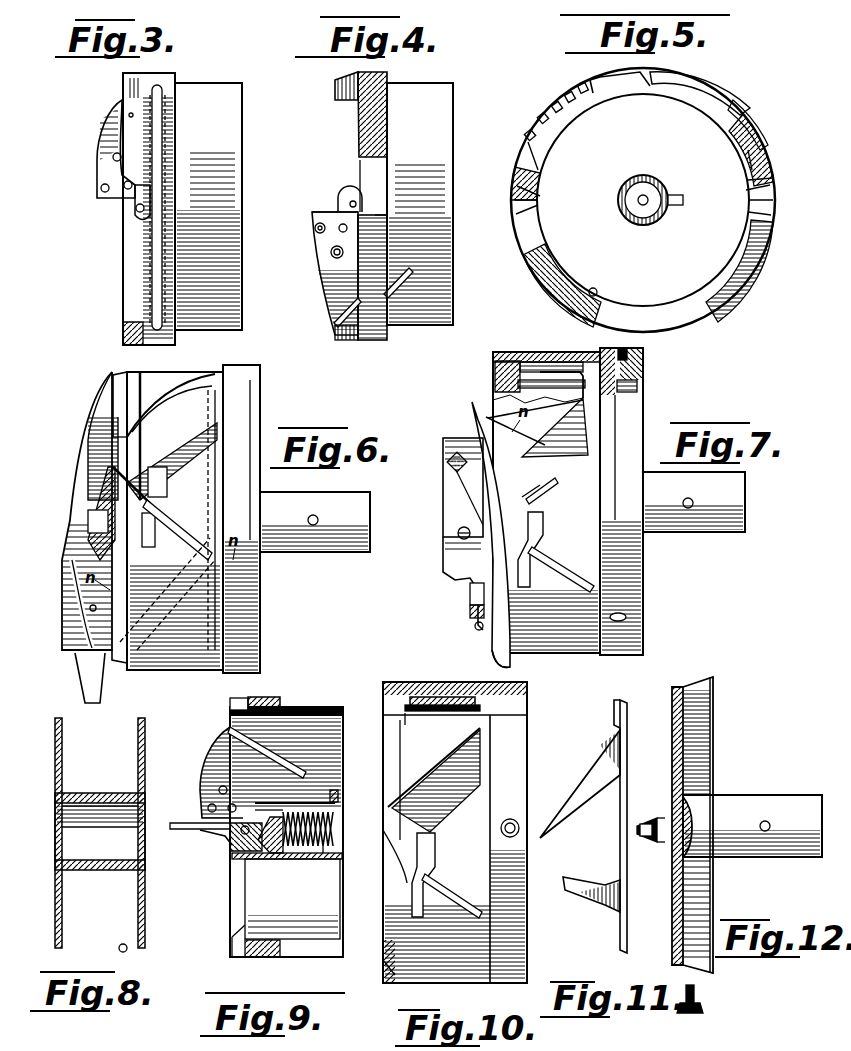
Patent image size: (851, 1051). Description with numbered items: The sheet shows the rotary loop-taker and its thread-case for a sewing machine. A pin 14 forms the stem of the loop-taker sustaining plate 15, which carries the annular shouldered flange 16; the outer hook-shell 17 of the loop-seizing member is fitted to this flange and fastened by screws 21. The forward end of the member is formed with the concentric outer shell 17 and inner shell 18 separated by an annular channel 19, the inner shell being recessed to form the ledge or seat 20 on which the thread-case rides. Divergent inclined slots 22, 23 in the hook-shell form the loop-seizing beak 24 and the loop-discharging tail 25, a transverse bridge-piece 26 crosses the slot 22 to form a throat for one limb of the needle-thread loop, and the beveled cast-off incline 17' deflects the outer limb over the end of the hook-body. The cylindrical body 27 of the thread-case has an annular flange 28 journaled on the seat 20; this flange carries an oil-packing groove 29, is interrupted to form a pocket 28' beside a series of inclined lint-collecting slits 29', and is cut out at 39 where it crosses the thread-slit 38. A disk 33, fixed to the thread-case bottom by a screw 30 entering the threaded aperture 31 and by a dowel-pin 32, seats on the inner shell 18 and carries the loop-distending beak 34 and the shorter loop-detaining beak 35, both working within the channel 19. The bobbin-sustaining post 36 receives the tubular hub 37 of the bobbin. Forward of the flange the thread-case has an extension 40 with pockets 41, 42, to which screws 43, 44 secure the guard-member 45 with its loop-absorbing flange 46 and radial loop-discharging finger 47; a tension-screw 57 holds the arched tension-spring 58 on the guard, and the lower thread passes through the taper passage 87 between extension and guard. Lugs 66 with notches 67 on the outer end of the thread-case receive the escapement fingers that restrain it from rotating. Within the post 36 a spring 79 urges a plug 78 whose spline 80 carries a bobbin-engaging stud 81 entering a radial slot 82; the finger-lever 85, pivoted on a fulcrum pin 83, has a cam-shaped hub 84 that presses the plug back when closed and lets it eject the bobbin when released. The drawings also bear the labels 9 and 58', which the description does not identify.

In FIG. 4, the bracket plate 9 is at (312, 214).
In FIG. 6, the pin 14 is at (318, 520).
In FIG. 7, the pin 14 is at (695, 503).
In FIG. 12, the pin 14 is at (752, 826).
In FIG. 7, the loop-taker sustaining plate 15 is at (628, 395).
In FIG. 12, the loop-taker sustaining plate 15 is at (672, 750).
In FIG. 7, the annular shouldered flange 16 is at (640, 380).
In FIG. 12, the annular shouldered flange 16 is at (690, 687).
In FIG. 6, the outer hook-shell 17 is at (175, 525).
In FIG. 7, the outer hook-shell 17 is at (547, 503).
In FIG. 10, the outer hook-shell 17 is at (455, 831).
In FIG. 6, the cast-off incline 17' is at (122, 677).
In FIG. 9, the cast-off incline 17' is at (309, 959).
In FIG. 10, the cast-off incline 17' is at (374, 965).
In FIG. 6, the inner shell 18 is at (182, 391).
In FIG. 7, the inner shell 18 is at (545, 366).
In FIG. 10, the inner shell 18 is at (430, 700).
In FIG. 6, the annular channel 19 is at (205, 378).
In FIG. 7, the annular channel 19 is at (555, 383).
In FIG. 10, the annular channel 19 is at (442, 705).
In FIG. 9, the bobbin-case sustaining ledge 20 is at (309, 926).
In FIG. 10, the bobbin-case sustaining ledge 20 is at (406, 716).
In FIG. 7, the screws 21 is at (628, 349).
In FIG. 11, the screws 21 is at (697, 993).
In FIG. 6, the inclined slot 22 is at (182, 520).
In FIG. 7, the inclined slot 22 is at (565, 560).
In FIG. 10, the inclined slot 22 is at (452, 893).
In FIG. 6, the inclined slot 23 is at (172, 458).
In FIG. 7, the inclined slot 23 is at (542, 484).
In FIG. 10, the inclined slot 23 is at (436, 781).
In FIG. 6, the loop-seizing beak 24 is at (120, 470).
In FIG. 9, the loop-seizing beak 24 is at (299, 908).
In FIG. 10, the loop-seizing beak 24 is at (395, 860).
In FIG. 6, the loop-discharging tail 25 is at (125, 420).
In FIG. 7, the loop-discharging tail 25 is at (515, 436).
In FIG. 10, the loop-discharging tail 25 is at (434, 767).
In FIG. 6, the bridge-piece 26 is at (166, 482).
In FIG. 7, the bridge-piece 26 is at (543, 527).
In FIG. 10, the bridge-piece 26 is at (437, 840).
In FIG. 3, the thread-case body 27 is at (208, 206).
In FIG. 4, the thread-case body 27 is at (418, 204).
In FIG. 6, the thread-case body 27 is at (224, 404).
In FIG. 9, the thread-case body 27 is at (310, 708).
In FIG. 3, the annular flange 28 is at (165, 204).
In FIG. 4, the annular flange 28 is at (392, 213).
In FIG. 5, the annular flange 28 is at (648, 200).
In FIG. 6, the annular flange 28 is at (85, 436).
In FIG. 7, the annular flange 28 is at (490, 426).
In FIG. 9, the annular flange 28 is at (264, 689).
In FIG. 4, the recess 28' is at (389, 182).
In FIG. 5, the recess 28' is at (620, 78).
In FIG. 3, the segmental undercut groove 29 is at (121, 318).
In FIG. 4, the inclined slits 29' is at (335, 99).
In FIG. 5, the inclined slits 29' is at (552, 112).
In FIG. 11, the screw 30 is at (650, 842).
In FIG. 5, the threaded aperture 31 is at (645, 205).
In FIG. 9, the threaded aperture 31 is at (335, 835).
In FIG. 7, the dowel-pin 32 is at (585, 396).
In FIG. 11, the dowel-pin 32 is at (614, 716).
In FIG. 11, the disk 33 is at (620, 843).
In FIG. 6, the loop-distending beak 34 is at (168, 582).
In FIG. 7, the loop-distending beak 34 is at (505, 355).
In FIG. 11, the loop-distending beak 34 is at (580, 785).
In FIG. 7, the loop-detaining beak 35 is at (607, 463).
In FIG. 11, the loop-detaining beak 35 is at (575, 878).
In FIG. 3, the bobbin-sustaining post 36 is at (135, 212).
In FIG. 4, the bobbin-sustaining post 36 is at (342, 181).
In FIG. 5, the bobbin-sustaining post 36 is at (637, 182).
In FIG. 9, the bobbin-sustaining post 36 is at (265, 860).
In FIG. 8, the bobbin hub 37 is at (102, 870).
In FIG. 4, the delivery slit 38 is at (334, 318).
In FIG. 7, the delivery slit 38 is at (545, 488).
In FIG. 9, the delivery slit 38 is at (230, 732).
In FIG. 4, the cut-out 39 is at (378, 218).
In FIG. 5, the cut-out 39 is at (762, 142).
In FIG. 3, the thread-case extension 40 is at (97, 165).
In FIG. 4, the thread-case extension 40 is at (312, 238).
In FIG. 5, the thread-case extension 40 is at (690, 96).
In FIG. 9, the thread-case extension 40 is at (221, 772).
In FIG. 3, the pocket 41 is at (114, 154).
In FIG. 4, the pocket 41 is at (331, 254).
In FIG. 3, the pocket 42 is at (101, 190).
In FIG. 4, the pocket 42 is at (315, 225).
In FIG. 7, the fastening screw 43 is at (450, 438).
In FIG. 7, the fastening screw 44 is at (476, 628).
In FIG. 6, the guard-member 45 is at (68, 556).
In FIG. 7, the guard-member 45 is at (443, 468).
In FIG. 7, the loop-absorbing flange 46 is at (510, 664).
In FIG. 6, the loop-discharging finger 47 is at (87, 680).
In FIG. 7, the loop-discharging finger 47 is at (472, 410).
In FIG. 7, the tension-screw 57 is at (458, 531).
In FIG. 7, the tension-spring 58 is at (469, 497).
In FIG. 7, the nut 58' is at (439, 455).
In FIG. 4, the lugs 66 is at (345, 340).
In FIG. 5, the lugs 66 is at (777, 190).
In FIG. 6, the lugs 66 is at (108, 495).
In FIG. 7, the lugs 66 is at (470, 611).
In FIG. 5, the notches 67 is at (538, 201).
In FIG. 6, the notches 67 is at (98, 520).
In FIG. 7, the notches 67 is at (470, 594).
In FIG. 9, the plug 78 is at (285, 853).
In FIG. 9, the spring 79 is at (323, 855).
In FIG. 9, the spline 80 is at (270, 808).
In FIG. 9, the bobbin-engaging stud 81 is at (338, 795).
In FIG. 9, the radial slot 82 is at (338, 803).
In FIG. 9, the fulcrum pin 83 is at (228, 838).
In FIG. 9, the cam-shaped hub 84 is at (240, 858).
In FIG. 9, the bobbin-confining finger-lever 85 is at (176, 820).
In FIG. 5, the taper passage 87 is at (748, 170).